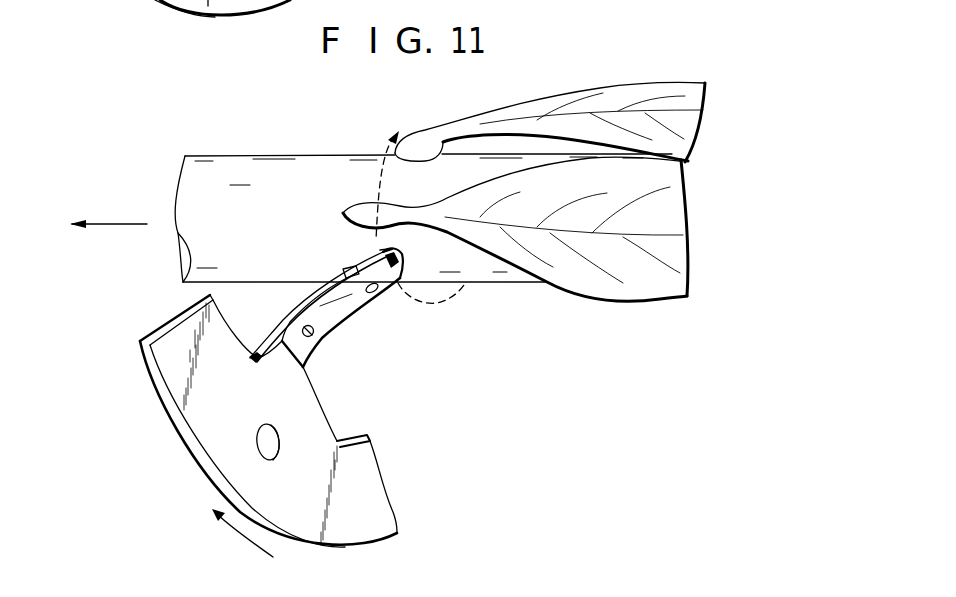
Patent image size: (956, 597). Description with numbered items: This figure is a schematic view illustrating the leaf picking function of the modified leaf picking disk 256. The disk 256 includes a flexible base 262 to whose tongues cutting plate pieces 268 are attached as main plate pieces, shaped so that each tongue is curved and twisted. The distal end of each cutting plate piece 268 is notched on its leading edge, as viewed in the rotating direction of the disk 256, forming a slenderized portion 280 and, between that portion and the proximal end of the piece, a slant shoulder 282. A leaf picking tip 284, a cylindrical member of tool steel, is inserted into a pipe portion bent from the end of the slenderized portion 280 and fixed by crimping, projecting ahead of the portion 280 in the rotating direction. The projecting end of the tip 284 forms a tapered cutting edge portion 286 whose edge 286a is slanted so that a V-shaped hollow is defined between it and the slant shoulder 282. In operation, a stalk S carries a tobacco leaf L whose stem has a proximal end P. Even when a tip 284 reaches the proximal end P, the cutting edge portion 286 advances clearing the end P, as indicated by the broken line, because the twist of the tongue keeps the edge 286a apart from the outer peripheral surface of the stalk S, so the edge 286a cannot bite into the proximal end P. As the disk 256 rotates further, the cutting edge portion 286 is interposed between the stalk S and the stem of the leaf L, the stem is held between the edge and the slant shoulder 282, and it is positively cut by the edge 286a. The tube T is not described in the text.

The tube T is at (266, 147).
The stalk S is at (197, 258).
The tobacco leaf L is at (578, 93).
The proximal end P is at (362, 205).
The leaf picking disk 256 is at (168, 460).
The flexible base 262 is at (193, 417).
The cutting plate piece 268 is at (334, 316).
The slenderized portion 280 is at (400, 283).
The slant shoulder 282 is at (341, 270).
The leaf picking tip 284 is at (400, 251).
The tapered cutting edge portion 286 is at (382, 253).
The edge 286a is at (380, 250).